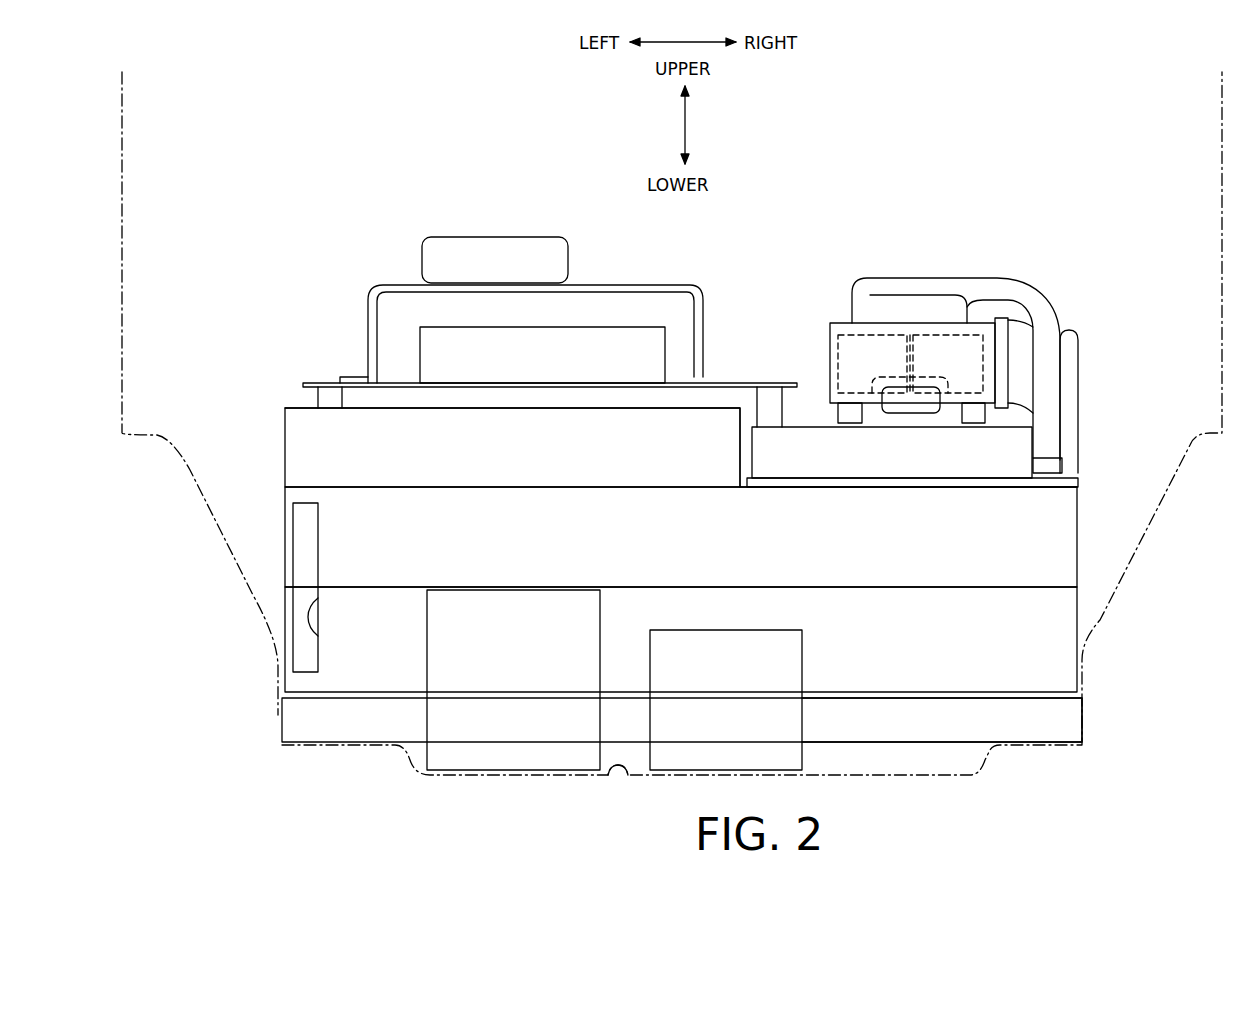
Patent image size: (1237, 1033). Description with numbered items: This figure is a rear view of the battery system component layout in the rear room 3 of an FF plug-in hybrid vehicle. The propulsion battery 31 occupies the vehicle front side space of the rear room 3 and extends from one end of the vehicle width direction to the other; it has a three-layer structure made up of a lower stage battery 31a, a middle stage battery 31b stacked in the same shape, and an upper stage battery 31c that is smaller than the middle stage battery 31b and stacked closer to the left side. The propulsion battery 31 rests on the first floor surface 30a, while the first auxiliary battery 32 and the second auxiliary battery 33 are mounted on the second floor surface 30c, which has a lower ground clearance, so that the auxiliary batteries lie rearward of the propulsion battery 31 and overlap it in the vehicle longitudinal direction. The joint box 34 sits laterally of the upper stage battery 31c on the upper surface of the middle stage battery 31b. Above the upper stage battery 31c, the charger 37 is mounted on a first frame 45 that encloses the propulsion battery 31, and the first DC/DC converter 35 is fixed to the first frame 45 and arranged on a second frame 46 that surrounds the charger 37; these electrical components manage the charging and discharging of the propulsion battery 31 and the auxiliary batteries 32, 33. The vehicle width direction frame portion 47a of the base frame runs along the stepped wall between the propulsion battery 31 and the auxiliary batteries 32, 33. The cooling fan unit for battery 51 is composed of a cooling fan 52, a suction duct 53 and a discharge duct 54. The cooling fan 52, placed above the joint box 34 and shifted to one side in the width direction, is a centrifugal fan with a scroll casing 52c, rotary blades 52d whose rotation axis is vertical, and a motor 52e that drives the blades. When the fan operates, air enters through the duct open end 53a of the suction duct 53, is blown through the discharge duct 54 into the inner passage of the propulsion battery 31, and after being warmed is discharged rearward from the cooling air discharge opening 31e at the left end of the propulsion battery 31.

The rear room 3 is at (333, 101).
The first floor surface 30a is at (318, 725).
The second floor surface 30c is at (630, 780).
The propulsion battery 31 is at (207, 345).
The lower stage battery 31a is at (363, 612).
The middle stage battery 31b is at (371, 518).
The upper stage battery 31c is at (370, 445).
The cooling air discharge opening 31e is at (318, 630).
The first auxiliary battery 32 is at (775, 658).
The second auxiliary battery 33 is at (573, 625).
The joint box 34 is at (815, 457).
The first DC/DC converter 35 is at (520, 248).
The charger 37 is at (583, 352).
The first frame 45 is at (328, 397).
The second frame 46 is at (368, 287).
The vehicle width direction frame portion 47a is at (920, 727).
The cooling fan unit for battery 51 is at (858, 264).
The cooling fan 52 is at (830, 350).
The scroll casing 52c is at (830, 335).
The rotary blades 52d is at (842, 338).
The motor 52e is at (905, 415).
The suction duct 53 is at (980, 276).
The duct open end 53a is at (1062, 468).
The discharge duct 54 is at (1068, 330).